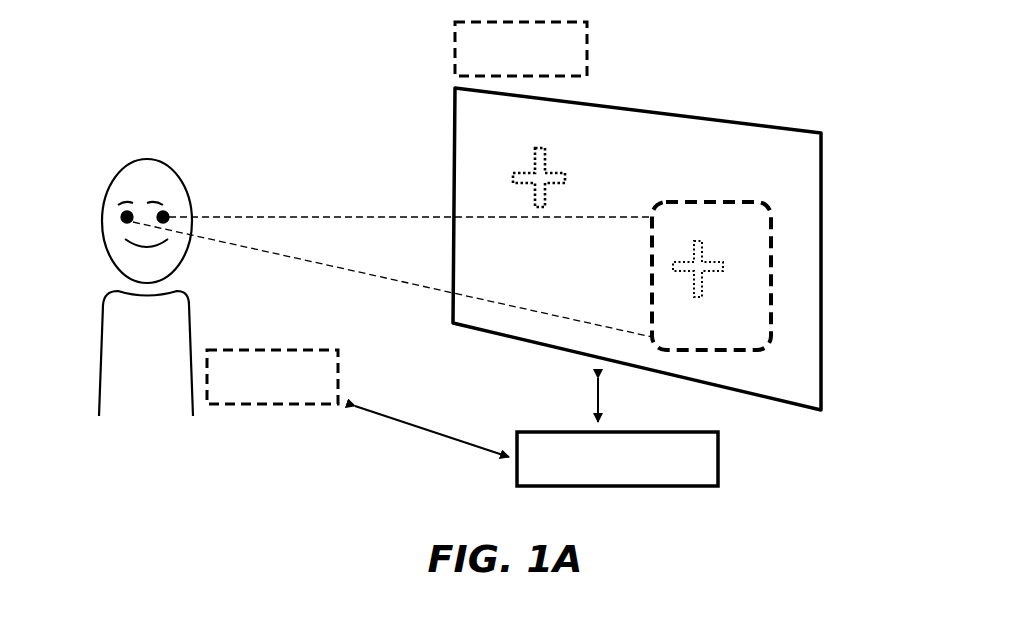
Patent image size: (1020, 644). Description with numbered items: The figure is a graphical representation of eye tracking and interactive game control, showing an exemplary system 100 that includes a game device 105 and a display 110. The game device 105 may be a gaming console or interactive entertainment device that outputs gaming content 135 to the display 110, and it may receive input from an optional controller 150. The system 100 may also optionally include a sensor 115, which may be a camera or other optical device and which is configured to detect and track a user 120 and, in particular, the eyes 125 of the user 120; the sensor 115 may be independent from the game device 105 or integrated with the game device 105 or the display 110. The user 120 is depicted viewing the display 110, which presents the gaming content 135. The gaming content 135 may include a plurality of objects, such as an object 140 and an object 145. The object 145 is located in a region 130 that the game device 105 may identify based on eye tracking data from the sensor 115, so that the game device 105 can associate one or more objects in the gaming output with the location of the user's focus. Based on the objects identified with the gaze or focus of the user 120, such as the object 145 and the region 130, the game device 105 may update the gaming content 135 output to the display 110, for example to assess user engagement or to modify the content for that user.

The system 100 is at (396, 60).
The game device 105 is at (719, 465).
The display 110 is at (822, 134).
The sensor 115 is at (588, 50).
The user 120 is at (92, 154).
The eyes 125 is at (116, 225).
The region 130 is at (738, 203).
The gaming content 135 is at (504, 161).
The object 140 is at (548, 167).
The object 145 is at (722, 265).
The controller 150 is at (339, 374).